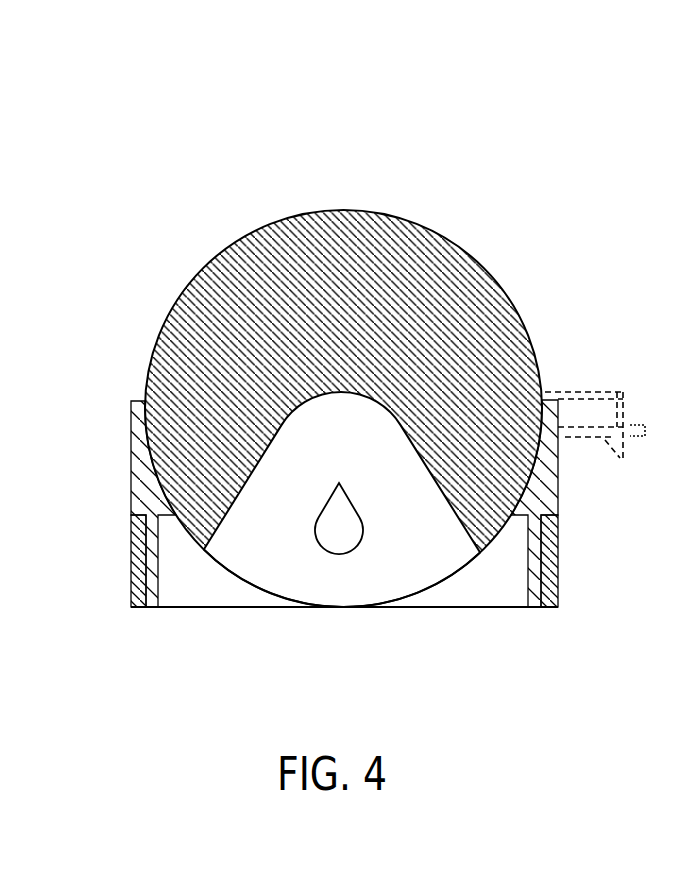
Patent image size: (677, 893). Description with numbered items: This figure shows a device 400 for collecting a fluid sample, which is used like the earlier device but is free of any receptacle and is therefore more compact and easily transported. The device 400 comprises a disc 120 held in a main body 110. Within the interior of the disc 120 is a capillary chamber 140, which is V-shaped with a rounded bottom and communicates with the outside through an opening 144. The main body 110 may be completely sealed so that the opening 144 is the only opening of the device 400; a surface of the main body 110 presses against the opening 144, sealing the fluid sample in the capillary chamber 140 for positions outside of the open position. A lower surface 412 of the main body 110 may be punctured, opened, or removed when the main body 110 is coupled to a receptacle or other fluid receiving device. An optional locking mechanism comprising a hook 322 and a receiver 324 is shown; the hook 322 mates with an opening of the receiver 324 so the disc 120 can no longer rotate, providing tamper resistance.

The device 400 is at (488, 93).
The disc 120 is at (230, 247).
The main body 110 is at (145, 463).
The lower surface 412 is at (250, 607).
The capillary chamber 140 is at (427, 575).
The opening 144 is at (387, 607).
The hook 322 is at (620, 392).
The receiver 324 is at (583, 438).